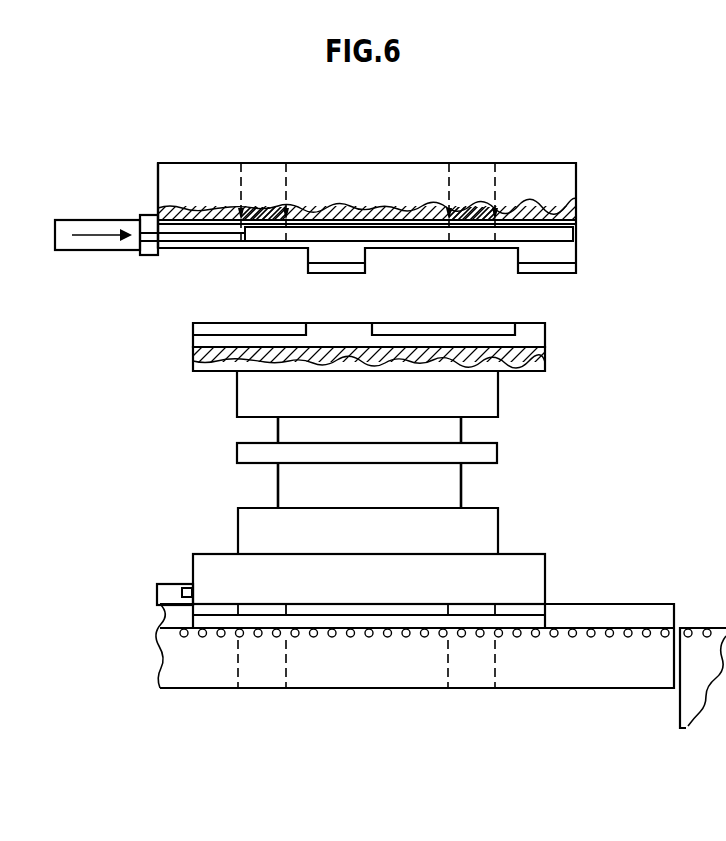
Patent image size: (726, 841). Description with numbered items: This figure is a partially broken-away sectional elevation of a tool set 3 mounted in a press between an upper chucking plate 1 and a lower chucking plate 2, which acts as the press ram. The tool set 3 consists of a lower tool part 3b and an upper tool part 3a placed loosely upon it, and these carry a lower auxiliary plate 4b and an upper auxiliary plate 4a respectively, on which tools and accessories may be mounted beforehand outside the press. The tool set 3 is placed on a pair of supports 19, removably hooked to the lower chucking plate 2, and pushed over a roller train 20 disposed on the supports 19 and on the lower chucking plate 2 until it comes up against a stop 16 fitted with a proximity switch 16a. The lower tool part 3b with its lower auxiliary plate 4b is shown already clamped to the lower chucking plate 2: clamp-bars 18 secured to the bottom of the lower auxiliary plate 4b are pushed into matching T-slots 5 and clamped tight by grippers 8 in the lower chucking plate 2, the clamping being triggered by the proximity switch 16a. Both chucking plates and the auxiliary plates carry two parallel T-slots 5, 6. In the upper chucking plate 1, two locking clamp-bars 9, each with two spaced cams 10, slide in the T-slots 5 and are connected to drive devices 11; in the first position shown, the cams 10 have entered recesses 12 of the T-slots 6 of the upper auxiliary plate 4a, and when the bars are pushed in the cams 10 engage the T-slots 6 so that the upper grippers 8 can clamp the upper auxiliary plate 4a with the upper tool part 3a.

The upper chucking plate 1 is at (565, 182).
The lower chucking plate 2 is at (615, 668).
The tool set 3 is at (498, 450).
The upper tool part 3a is at (498, 395).
The lower tool part 3b is at (493, 535).
The upper auxiliary plate 4a is at (530, 366).
The lower auxiliary plate 4b is at (538, 580).
The T-slots 5 is at (192, 223).
The T-slots 6 is at (420, 335).
The grippers 8 is at (473, 182).
The locking clamp-bars 9 is at (565, 230).
The cams 10 is at (317, 250).
The drive devices 11 is at (86, 240).
The recesses 12 is at (530, 333).
The stop 16 is at (170, 597).
The proximity switch 16a is at (188, 589).
The clamp-bars 18 is at (540, 608).
The supports 19 is at (687, 681).
The roller train 20 is at (648, 628).